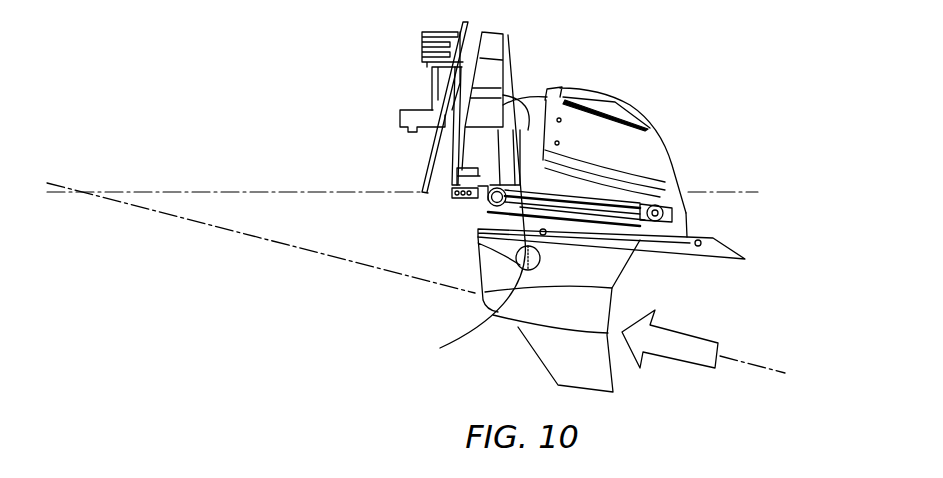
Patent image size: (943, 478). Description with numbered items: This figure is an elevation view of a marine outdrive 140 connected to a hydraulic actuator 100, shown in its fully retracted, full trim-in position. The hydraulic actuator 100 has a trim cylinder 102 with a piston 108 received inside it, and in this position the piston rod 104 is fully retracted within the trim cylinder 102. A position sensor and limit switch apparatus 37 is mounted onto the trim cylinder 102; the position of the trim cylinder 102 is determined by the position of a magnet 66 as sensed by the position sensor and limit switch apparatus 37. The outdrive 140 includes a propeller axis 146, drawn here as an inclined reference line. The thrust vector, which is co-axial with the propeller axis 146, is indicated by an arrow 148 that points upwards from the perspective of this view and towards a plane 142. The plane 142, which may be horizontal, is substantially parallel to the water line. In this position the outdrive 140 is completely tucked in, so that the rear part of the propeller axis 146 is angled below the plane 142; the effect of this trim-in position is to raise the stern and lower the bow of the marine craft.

The outdrive 140 is at (388, 40).
The magnet 66 is at (517, 85).
The trim cylinder 102 is at (460, 158).
The hydraulic actuator 100 is at (476, 203).
The position sensor and limit switch apparatus 37 is at (603, 190).
The plane 142 is at (745, 192).
The piston rod 104 is at (637, 212).
The piston 108 is at (575, 302).
The arrow 148 is at (687, 333).
The propeller axis 146 is at (772, 368).